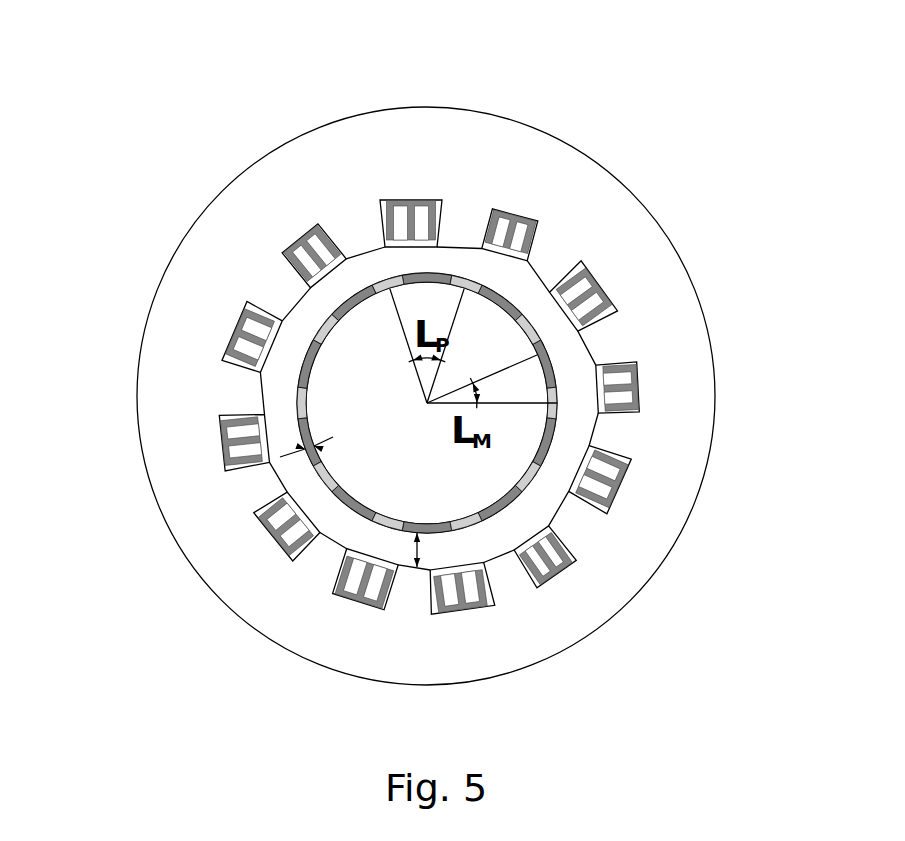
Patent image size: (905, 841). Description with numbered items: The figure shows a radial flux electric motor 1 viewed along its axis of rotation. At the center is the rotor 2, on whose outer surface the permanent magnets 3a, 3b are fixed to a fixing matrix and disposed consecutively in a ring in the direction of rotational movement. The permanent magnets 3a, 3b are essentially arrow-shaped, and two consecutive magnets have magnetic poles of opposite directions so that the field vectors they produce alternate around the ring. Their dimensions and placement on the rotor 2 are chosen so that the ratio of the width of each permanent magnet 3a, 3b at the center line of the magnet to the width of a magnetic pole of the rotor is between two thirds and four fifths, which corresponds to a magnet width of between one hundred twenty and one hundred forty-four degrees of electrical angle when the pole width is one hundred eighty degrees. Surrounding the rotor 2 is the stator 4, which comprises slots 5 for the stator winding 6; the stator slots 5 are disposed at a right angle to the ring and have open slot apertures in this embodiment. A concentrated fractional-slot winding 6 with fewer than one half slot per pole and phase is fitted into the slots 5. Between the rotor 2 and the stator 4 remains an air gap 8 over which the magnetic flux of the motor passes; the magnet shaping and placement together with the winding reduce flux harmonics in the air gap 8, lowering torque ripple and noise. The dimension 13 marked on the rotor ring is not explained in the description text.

The electric motor 1 is at (474, 360).
The rotor 2 is at (518, 491).
The permanent magnet 3a is at (191, 282).
The permanent magnet 3b is at (269, 219).
The stator 4 is at (523, 407).
The stator slot 5 is at (252, 632).
The stator winding 6 is at (203, 594).
The air gap 8 is at (449, 547).
The magnet ring thickness 13 is at (347, 460).